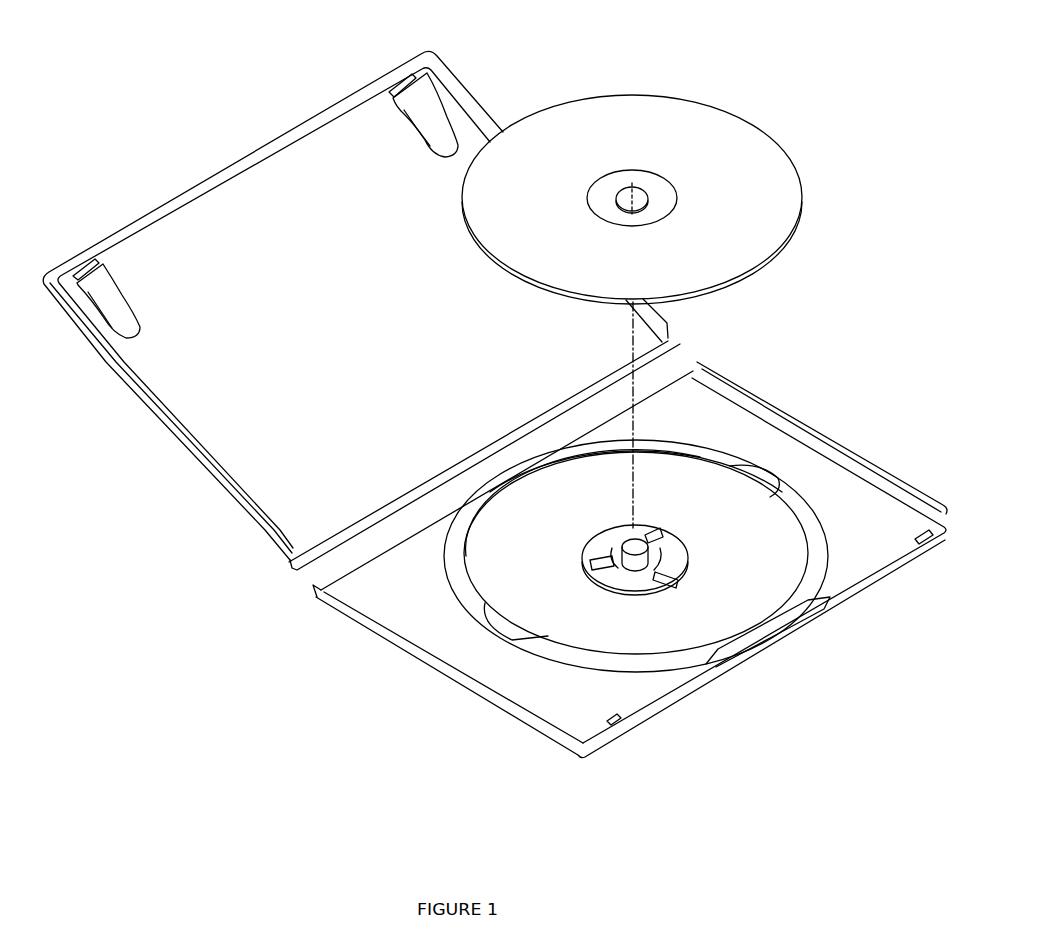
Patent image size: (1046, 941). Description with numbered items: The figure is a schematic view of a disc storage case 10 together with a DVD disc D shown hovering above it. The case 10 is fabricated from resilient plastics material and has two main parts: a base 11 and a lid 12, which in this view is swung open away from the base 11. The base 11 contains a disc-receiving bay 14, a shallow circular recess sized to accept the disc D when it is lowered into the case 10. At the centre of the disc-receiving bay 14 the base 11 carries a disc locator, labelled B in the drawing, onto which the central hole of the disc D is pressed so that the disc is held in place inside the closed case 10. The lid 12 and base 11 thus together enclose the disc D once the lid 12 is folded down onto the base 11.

The disc storage case 10 is at (825, 279).
The base 11 is at (537, 697).
The lid 12 is at (258, 188).
The disc-receiving bay 14 is at (525, 492).
The hub button B is at (698, 542).
The disc D is at (680, 112).